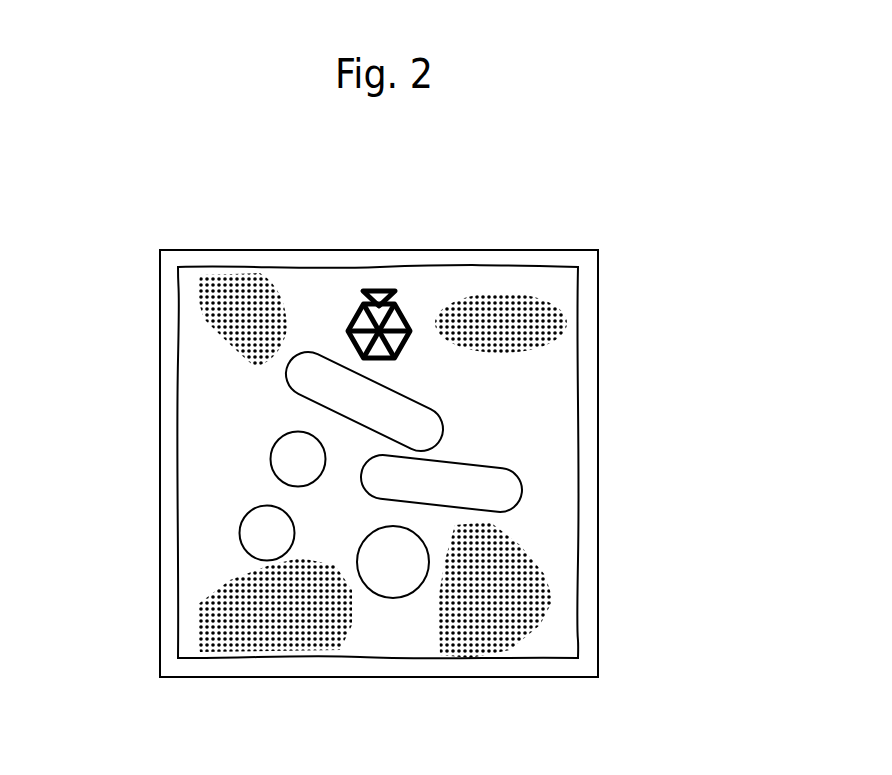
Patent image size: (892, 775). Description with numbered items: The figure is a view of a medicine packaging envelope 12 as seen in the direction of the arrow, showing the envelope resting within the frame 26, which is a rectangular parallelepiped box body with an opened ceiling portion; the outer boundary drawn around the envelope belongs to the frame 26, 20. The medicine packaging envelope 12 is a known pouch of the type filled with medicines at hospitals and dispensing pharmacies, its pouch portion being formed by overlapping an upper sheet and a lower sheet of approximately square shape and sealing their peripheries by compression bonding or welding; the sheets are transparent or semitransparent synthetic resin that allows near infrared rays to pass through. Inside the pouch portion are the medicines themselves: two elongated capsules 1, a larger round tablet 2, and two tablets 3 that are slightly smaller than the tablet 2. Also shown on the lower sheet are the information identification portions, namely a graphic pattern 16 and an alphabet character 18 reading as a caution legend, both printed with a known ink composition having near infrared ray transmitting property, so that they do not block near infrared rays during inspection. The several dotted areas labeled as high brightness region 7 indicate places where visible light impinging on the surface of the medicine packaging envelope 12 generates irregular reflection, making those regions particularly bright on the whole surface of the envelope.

The capsules 1 is at (313, 353).
The tablets 2 is at (393, 590).
The tablets 3 is at (272, 452).
The high brightness region 7 is at (272, 287).
The medicine packaging envelope 12 is at (187, 372).
The graphic pattern 16 is at (407, 307).
The alphabet character 18 is at (463, 373).
The container 20 is at (597, 289).
The frame 26 is at (448, 463).